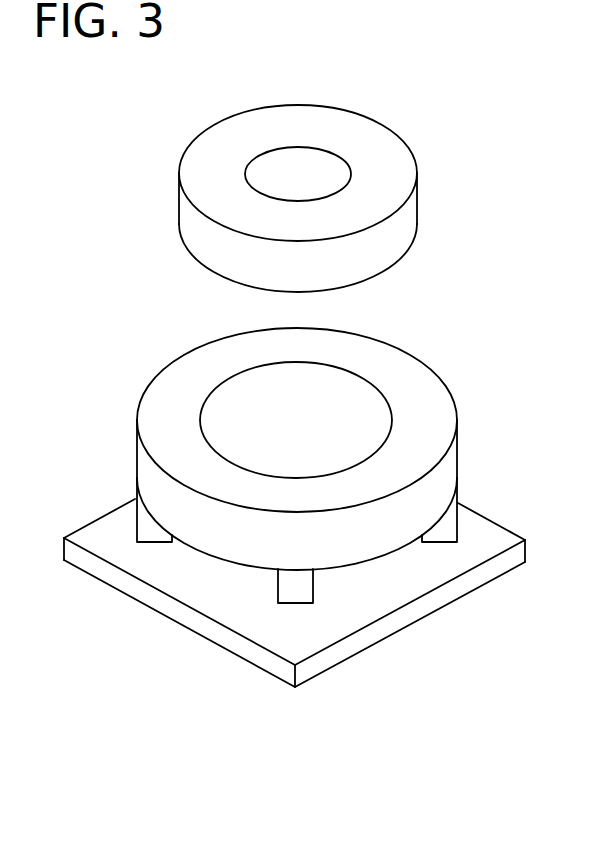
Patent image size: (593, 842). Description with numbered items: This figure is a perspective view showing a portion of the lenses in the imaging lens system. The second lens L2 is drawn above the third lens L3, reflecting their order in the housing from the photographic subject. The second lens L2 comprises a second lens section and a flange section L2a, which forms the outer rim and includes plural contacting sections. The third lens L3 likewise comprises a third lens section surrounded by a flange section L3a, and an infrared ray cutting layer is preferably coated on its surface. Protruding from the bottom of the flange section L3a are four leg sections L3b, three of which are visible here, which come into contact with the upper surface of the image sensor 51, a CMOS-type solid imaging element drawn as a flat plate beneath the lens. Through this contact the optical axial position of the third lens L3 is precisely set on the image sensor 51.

The second lens L2 is at (329, 208).
The flange section L2a is at (371, 270).
The third lens L3 is at (308, 514).
The flange section L3a is at (440, 478).
The leg sections L3b is at (147, 528).
The image sensor 51 is at (433, 600).